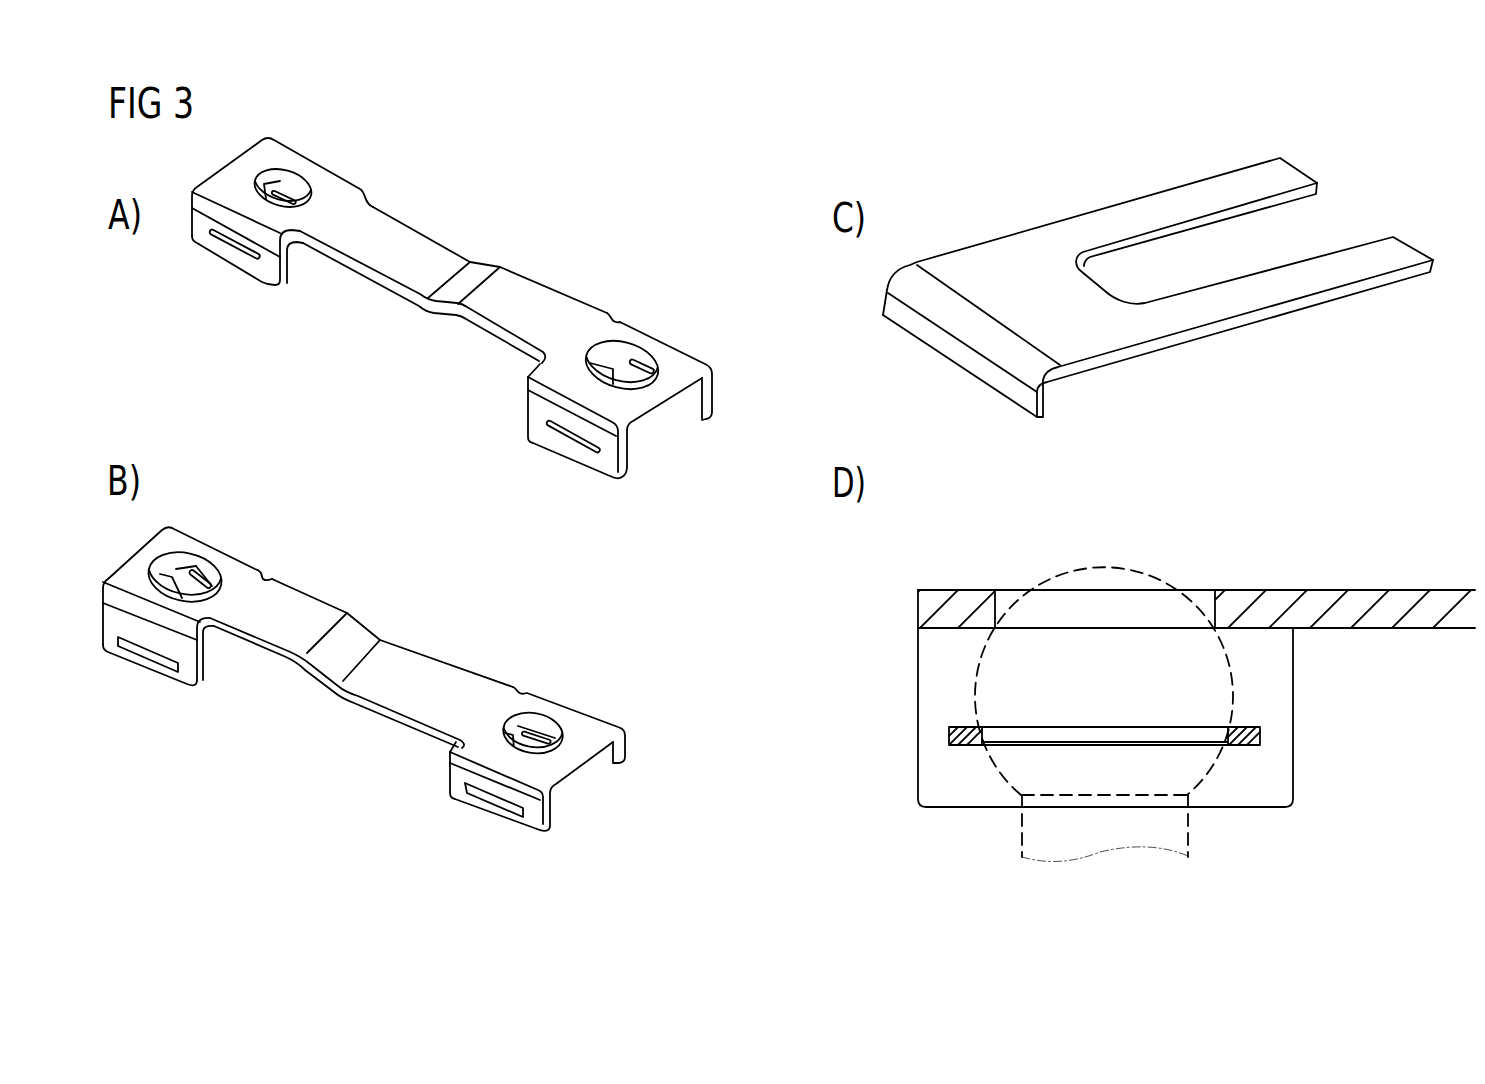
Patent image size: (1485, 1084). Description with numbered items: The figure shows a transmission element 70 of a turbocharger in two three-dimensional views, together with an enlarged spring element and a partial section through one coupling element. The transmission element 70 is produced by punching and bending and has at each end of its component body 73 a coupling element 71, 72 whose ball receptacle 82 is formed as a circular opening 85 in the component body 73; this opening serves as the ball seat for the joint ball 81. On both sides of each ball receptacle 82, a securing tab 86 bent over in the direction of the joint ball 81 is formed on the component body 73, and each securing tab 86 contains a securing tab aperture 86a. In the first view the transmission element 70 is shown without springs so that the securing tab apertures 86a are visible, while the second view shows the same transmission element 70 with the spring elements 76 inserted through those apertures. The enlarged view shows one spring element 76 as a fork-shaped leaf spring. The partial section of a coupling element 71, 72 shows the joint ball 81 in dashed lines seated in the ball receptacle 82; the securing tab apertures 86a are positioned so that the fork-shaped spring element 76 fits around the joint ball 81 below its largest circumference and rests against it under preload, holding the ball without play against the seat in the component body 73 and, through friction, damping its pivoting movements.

The transmission element 70 is at (789, 511).
The coupling element 71 is at (801, 579).
The coupling element 72 is at (230, 288).
The component body 73 is at (420, 255).
The spring element 76 is at (1103, 332).
The joint ball 81 is at (1130, 558).
The ball receptacle 82 is at (283, 190).
The circular opening 85 is at (1092, 645).
The securing tab 86 is at (272, 280).
The securing tab aperture 86a is at (212, 246).